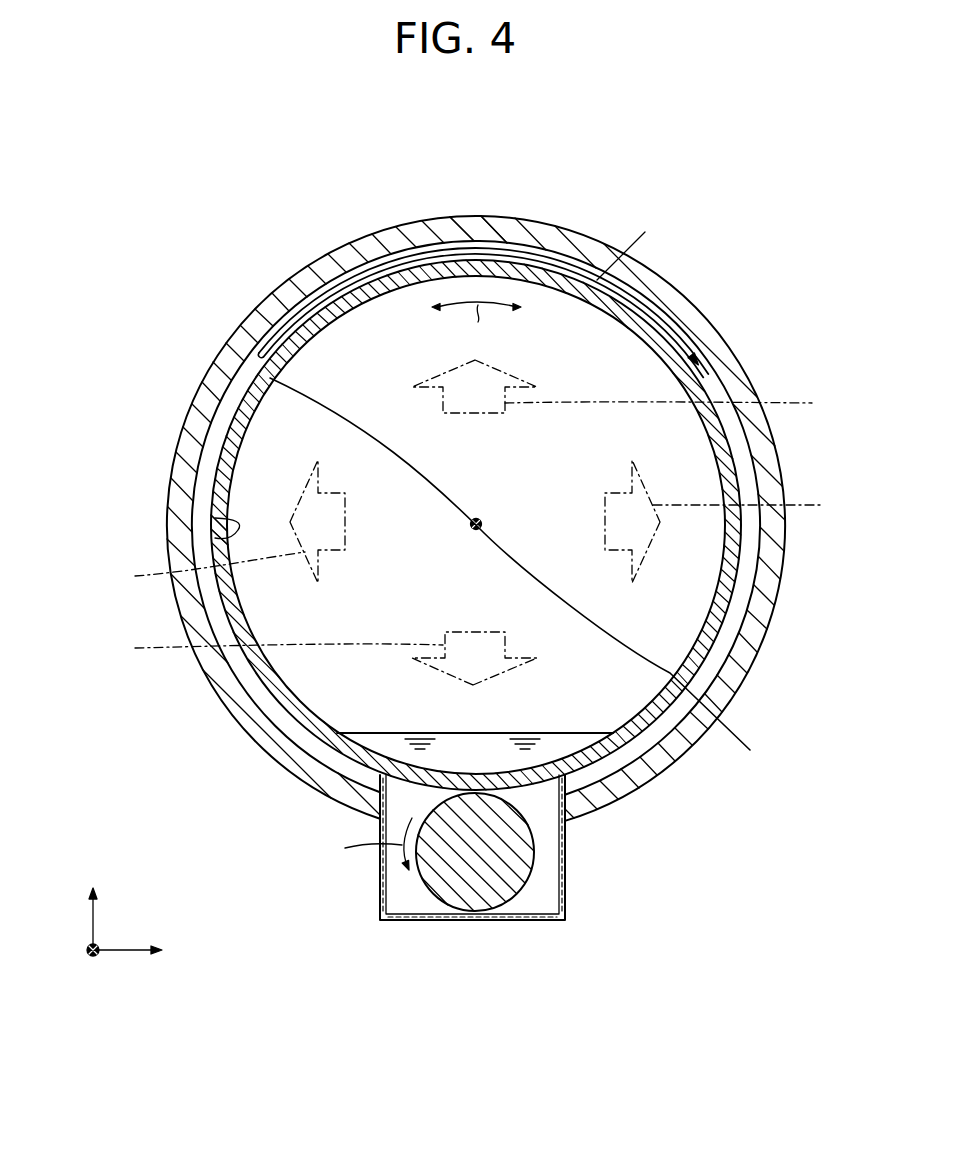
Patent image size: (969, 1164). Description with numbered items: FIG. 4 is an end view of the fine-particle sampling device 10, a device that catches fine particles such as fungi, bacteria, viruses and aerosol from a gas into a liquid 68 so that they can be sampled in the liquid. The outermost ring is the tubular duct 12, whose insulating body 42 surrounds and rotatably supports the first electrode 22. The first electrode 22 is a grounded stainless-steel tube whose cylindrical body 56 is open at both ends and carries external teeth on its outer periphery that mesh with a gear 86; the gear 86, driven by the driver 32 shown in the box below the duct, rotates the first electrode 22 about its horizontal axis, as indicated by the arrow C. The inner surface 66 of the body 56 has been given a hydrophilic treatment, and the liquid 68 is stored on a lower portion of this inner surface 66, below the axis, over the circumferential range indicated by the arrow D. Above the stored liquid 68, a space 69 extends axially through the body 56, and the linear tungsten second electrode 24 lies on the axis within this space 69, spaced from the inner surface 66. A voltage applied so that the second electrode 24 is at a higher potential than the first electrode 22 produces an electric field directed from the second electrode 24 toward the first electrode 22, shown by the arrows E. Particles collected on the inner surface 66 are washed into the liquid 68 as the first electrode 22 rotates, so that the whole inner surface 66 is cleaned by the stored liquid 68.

The fine-particle sampling device 10 is at (103, 137).
The duct 12 is at (500, 216).
The body 42 is at (455, 218).
The first electrode 22 is at (218, 443).
The second electrode 24 is at (247, 357).
The body 56 is at (212, 475).
The inner surface 66 is at (215, 520).
The liquid 68 is at (392, 748).
The space 69 is at (657, 610).
The gear 86 is at (505, 858).
The driver 32 is at (475, 928).